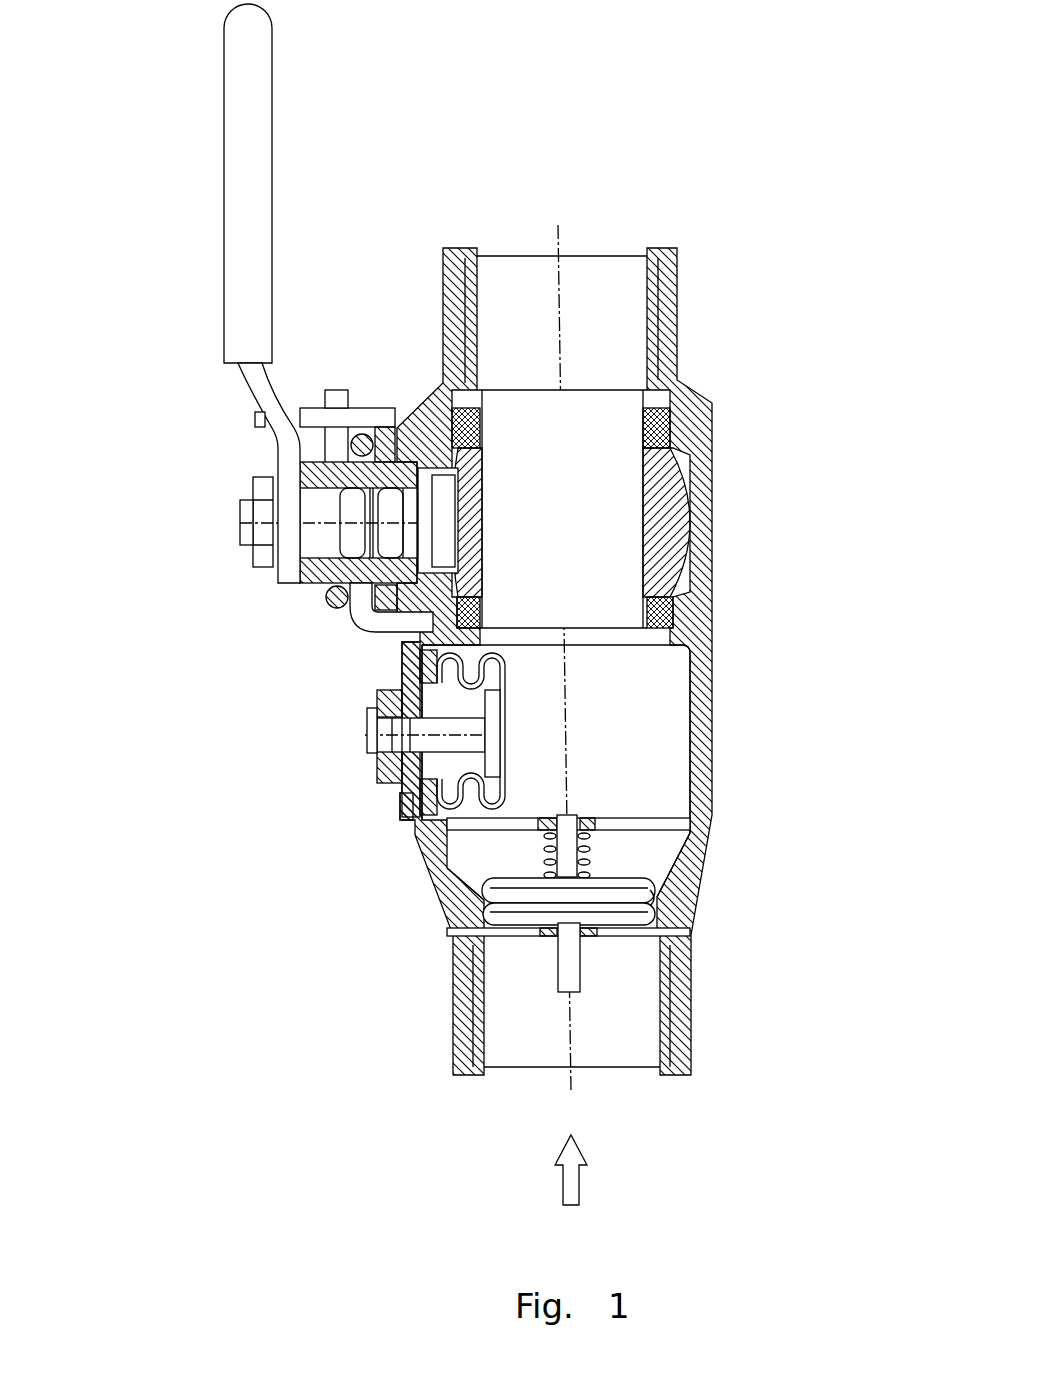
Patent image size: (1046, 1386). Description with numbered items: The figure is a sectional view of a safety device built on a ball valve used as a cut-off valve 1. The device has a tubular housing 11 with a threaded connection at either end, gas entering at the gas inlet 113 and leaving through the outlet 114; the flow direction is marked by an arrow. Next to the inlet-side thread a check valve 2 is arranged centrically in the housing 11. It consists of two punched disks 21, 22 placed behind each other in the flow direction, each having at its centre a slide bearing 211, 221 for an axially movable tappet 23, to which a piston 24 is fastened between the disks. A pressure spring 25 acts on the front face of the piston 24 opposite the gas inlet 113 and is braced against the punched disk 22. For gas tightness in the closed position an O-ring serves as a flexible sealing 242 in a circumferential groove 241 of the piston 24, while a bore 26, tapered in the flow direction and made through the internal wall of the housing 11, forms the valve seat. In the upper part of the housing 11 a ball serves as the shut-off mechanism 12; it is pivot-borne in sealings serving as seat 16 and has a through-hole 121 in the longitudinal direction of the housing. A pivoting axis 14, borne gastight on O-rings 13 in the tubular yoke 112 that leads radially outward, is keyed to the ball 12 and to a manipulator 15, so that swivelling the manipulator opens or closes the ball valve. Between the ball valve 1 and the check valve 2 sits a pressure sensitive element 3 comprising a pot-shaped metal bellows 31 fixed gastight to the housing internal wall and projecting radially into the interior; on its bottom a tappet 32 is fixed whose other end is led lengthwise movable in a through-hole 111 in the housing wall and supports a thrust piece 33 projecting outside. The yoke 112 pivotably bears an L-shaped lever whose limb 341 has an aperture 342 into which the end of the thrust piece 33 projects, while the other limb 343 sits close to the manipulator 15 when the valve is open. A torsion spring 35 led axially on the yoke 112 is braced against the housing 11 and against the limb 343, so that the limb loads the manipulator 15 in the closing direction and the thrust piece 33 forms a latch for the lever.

The cut-off valve 1 is at (728, 385).
The tubular housing 11 is at (698, 420).
The through-hole 111 is at (392, 708).
The tubular yoke 112 is at (320, 570).
The gas inlet 113 is at (605, 1040).
The outlet 114 is at (587, 290).
The shut-off mechanism 12 is at (668, 490).
The through-hole 121 is at (612, 535).
The O-rings 13 is at (392, 543).
The pivoting axis 14 is at (317, 503).
The manipulator 15 is at (246, 322).
The seat 16 is at (658, 412).
The check valve 2 is at (657, 870).
The punched disk 21 is at (632, 932).
The slide bearing 211 is at (597, 935).
The punched disk 22 is at (643, 823).
The slide bearing 221 is at (577, 828).
The tappet 23 is at (567, 980).
The piston 24 is at (482, 938).
The circumferential groove 241 is at (510, 912).
The flexible sealing 242 is at (500, 900).
The pressure spring 25 is at (547, 848).
The bore 26 is at (658, 898).
The pressure sensitive element 3 is at (533, 730).
The metal bellows 31 is at (505, 665).
The tappet 32 is at (397, 755).
The thrust piece 33 is at (398, 740).
The limb 341 is at (392, 776).
The aperture 342 is at (452, 742).
The limb 343 is at (263, 423).
The torsion spring 35 is at (337, 597).